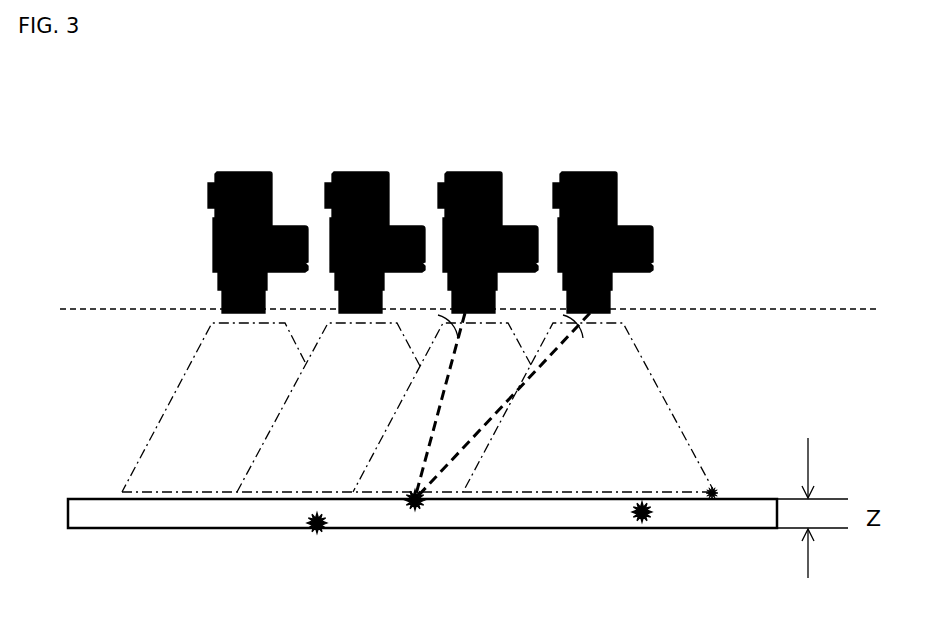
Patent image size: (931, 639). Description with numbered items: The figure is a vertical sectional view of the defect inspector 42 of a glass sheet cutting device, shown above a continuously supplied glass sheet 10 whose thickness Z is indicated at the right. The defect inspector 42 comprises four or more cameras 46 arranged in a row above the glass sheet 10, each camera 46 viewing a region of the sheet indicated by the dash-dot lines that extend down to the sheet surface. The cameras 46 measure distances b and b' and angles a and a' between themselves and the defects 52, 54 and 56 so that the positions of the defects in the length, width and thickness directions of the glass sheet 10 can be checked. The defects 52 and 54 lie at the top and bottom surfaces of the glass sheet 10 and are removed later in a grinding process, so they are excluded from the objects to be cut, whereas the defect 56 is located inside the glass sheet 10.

The defect inspector 42 is at (143, 89).
The camera 46 is at (650, 238).
The glass sheet 10 is at (713, 490).
The defect 52 is at (312, 535).
The defect 54 is at (413, 507).
The defect 56 is at (638, 522).